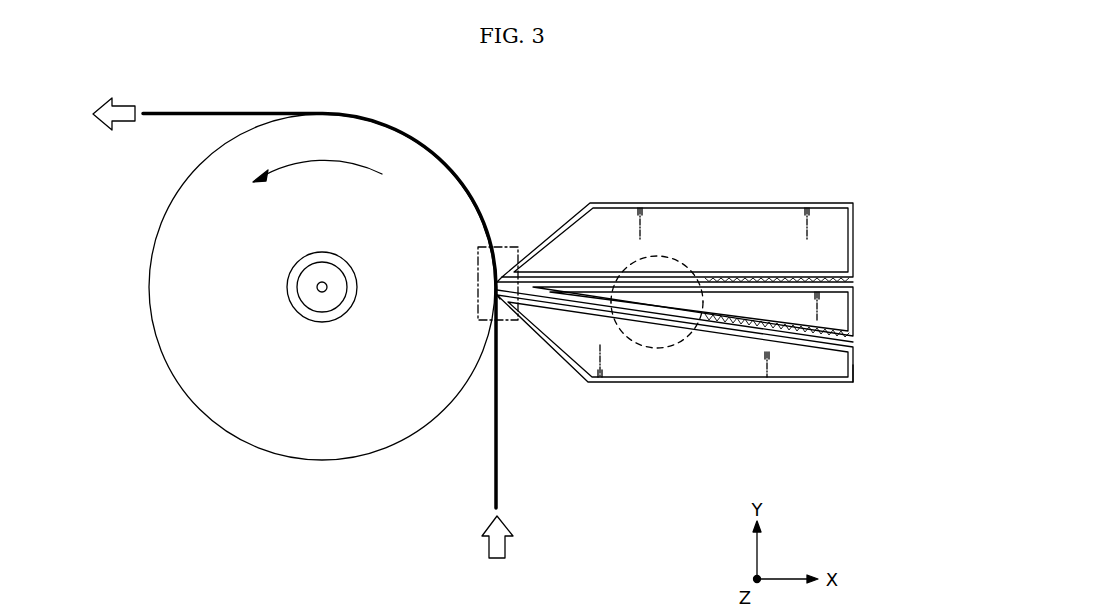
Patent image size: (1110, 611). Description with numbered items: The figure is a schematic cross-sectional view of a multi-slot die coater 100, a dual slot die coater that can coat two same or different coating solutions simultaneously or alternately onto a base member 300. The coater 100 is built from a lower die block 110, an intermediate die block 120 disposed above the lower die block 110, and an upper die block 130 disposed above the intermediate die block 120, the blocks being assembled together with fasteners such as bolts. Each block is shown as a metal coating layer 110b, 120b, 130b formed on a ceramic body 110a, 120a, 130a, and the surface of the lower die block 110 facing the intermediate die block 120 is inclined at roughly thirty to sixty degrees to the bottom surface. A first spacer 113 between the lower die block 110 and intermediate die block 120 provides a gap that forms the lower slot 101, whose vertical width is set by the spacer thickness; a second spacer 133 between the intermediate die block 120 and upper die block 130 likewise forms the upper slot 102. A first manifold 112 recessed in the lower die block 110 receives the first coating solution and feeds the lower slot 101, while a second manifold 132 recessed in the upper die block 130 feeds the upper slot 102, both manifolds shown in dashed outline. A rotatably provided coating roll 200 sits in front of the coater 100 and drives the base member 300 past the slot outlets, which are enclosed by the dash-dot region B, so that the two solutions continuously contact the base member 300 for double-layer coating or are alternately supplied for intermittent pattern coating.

The multi-slot die coater 100 is at (707, 140).
The lower slot 101 is at (561, 302).
The upper slot 102 is at (562, 282).
The lower die block 110 is at (714, 362).
The ceramic body 110a is at (720, 360).
The metal coating layer 110b is at (830, 382).
The first manifold 112 is at (684, 343).
The first spacer 113 is at (855, 347).
The intermediate die block 120 is at (732, 291).
The ceramic body 120a is at (773, 305).
The metal coating layer 120b is at (800, 286).
The upper die block 130 is at (717, 215).
The ceramic body 130a is at (716, 237).
The metal coating layer 130b is at (826, 203).
The second manifold 132 is at (662, 256).
The second spacer 133 is at (855, 281).
The coating roll 200 is at (281, 466).
The base member 300 is at (499, 456).
The enlarged region B is at (500, 247).